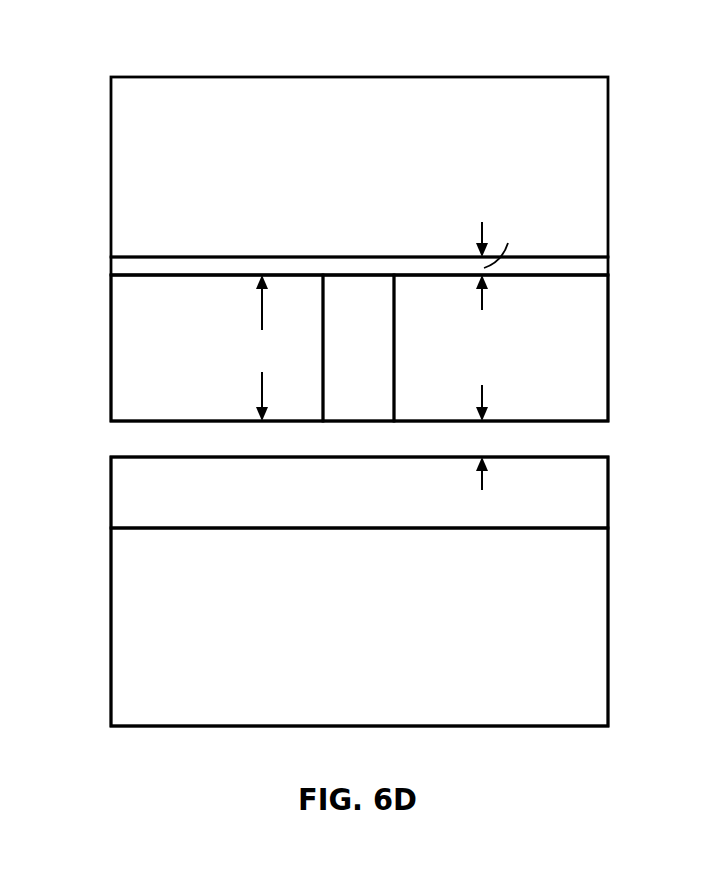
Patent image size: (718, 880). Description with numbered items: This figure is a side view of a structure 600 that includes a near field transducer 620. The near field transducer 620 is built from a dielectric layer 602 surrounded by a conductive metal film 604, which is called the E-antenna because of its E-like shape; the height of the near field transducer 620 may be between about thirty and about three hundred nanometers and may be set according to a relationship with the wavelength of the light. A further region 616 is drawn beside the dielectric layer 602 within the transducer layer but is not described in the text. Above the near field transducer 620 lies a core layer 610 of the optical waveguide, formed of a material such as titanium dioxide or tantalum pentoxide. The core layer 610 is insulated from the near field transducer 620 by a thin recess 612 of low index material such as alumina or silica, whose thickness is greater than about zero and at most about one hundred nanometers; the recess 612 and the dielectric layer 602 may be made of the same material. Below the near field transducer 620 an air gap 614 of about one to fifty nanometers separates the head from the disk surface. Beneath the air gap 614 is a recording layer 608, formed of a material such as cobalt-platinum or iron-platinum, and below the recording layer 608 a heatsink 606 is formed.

The structure 600 is at (375, 378).
The dielectric layer 602 is at (358, 348).
The conductive metal film 604 is at (617, 275).
The heatsink 606 is at (359, 627).
The recording layer 608 is at (359, 492).
The core layer 610 is at (393, 190).
The recess 612 is at (104, 265).
The air gap 614 is at (339, 555).
The third semiconductor layer 616 is at (217, 348).
The near field transducer 620 is at (402, 348).